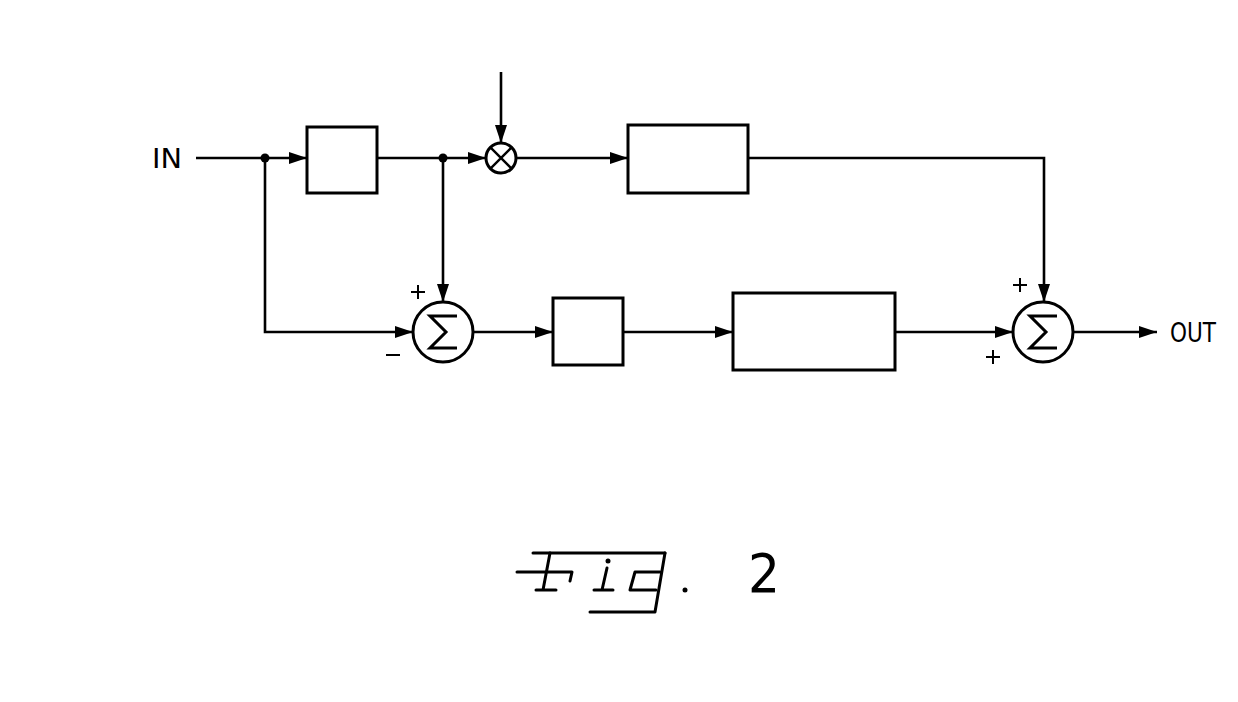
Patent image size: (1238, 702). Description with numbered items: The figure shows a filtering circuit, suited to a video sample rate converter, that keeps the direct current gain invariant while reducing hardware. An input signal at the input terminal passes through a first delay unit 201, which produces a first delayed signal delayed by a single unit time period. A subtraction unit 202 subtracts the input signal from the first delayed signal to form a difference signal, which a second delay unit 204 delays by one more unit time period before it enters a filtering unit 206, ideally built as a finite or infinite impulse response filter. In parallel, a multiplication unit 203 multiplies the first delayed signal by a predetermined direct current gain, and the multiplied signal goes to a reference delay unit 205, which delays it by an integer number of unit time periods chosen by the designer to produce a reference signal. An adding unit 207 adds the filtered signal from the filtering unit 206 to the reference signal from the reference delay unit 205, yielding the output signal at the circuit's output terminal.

The first delay unit 201 is at (325, 127).
The subtraction unit 202 is at (429, 359).
The multiplication unit 203 is at (501, 173).
The second delay unit 204 is at (583, 365).
The reference delay unit 205 is at (710, 125).
The filtering unit 206 is at (815, 370).
The adding unit 207 is at (1060, 357).